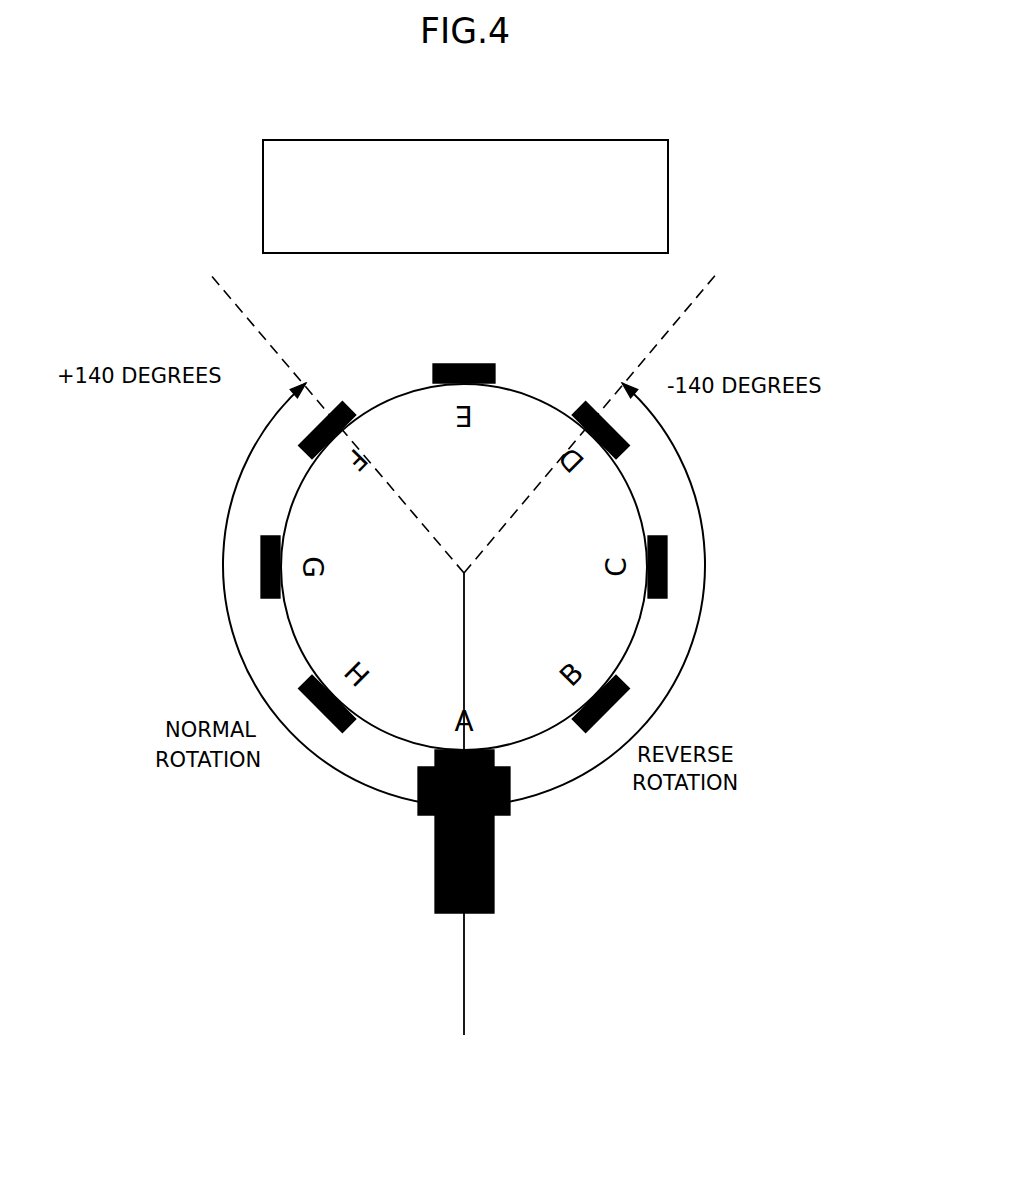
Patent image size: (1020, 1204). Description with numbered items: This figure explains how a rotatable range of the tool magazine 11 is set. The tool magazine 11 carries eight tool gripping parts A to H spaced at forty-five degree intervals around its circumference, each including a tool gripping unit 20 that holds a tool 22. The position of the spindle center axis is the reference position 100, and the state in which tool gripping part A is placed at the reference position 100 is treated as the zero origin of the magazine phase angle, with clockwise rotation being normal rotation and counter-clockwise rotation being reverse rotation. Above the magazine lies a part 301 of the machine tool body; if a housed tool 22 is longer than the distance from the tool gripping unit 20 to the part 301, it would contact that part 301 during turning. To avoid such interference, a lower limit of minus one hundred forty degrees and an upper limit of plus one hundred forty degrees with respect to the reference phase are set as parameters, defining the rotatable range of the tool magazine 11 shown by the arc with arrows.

The part of the machine tool body 301 is at (633, 188).
The tool magazine 11 is at (632, 648).
The tool gripping unit 20 is at (667, 557).
The tool 22 is at (435, 863).
The reference position 100 is at (464, 978).